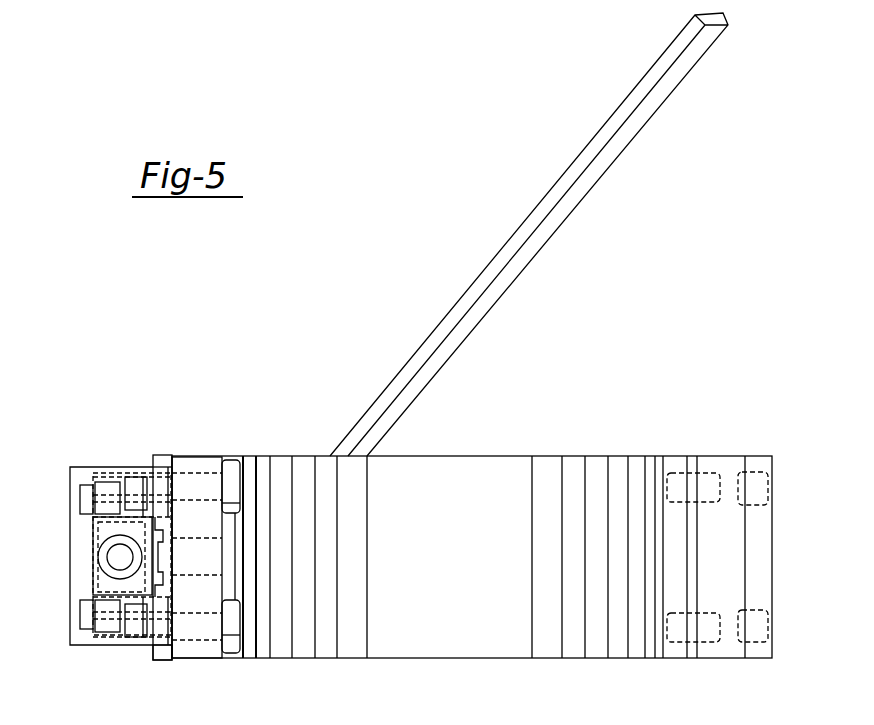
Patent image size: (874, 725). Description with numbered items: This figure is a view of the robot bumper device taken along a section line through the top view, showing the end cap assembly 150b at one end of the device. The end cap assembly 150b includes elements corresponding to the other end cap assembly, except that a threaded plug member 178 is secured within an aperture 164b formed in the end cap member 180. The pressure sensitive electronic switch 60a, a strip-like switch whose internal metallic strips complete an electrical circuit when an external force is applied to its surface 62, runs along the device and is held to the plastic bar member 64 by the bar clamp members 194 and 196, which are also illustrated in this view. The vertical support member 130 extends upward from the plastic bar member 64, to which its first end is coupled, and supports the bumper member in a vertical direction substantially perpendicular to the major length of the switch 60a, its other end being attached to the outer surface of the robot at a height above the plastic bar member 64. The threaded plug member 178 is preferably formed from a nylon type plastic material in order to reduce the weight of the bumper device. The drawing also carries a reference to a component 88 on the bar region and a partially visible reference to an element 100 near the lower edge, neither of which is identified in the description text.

The main body / housing 88 is at (430, 612).
The vertical support member 130 is at (368, 346).
The plastic bar member 64 is at (193, 463).
The bar clamp member 194 is at (160, 453).
The bar clamp member 196 is at (165, 650).
The end cap assembly 150b is at (92, 555).
The end cap member 180 is at (80, 639).
The pressure sensitive electronic switch 60a is at (93, 533).
The surface 62 is at (85, 553).
The aperture 164b is at (132, 585).
The threaded plug member 178 is at (108, 572).
The apparatus 100 is at (771, 724).